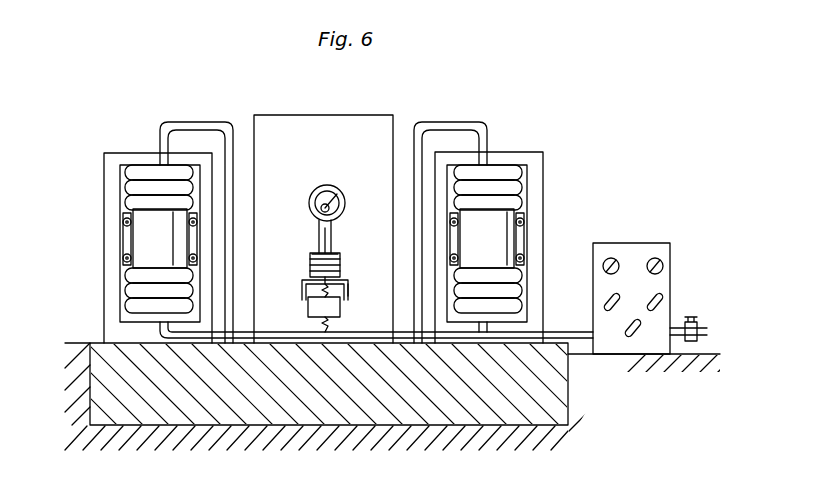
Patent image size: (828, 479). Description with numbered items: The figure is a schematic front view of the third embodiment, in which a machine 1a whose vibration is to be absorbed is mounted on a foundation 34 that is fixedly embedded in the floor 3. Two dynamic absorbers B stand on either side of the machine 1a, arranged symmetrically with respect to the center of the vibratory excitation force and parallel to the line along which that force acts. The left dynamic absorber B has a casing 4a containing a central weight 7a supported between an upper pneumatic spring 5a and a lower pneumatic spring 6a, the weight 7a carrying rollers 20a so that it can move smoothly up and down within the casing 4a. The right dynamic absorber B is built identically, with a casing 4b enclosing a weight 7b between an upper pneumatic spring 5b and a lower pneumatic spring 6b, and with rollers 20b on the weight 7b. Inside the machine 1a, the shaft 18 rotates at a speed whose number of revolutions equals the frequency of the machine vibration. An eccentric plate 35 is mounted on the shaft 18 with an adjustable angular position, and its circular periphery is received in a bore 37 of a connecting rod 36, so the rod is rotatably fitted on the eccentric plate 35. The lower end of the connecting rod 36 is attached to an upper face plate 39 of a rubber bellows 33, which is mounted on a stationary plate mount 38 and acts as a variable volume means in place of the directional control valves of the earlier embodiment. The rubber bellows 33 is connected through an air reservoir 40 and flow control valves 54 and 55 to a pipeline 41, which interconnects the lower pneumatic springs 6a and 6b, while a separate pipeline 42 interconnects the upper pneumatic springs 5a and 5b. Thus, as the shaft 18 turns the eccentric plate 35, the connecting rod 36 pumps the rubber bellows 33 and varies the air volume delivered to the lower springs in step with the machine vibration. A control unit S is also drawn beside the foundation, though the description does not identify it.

The machine 1a is at (331, 115).
The floor 3 is at (82, 362).
The casing 4a is at (104, 266).
The casing 4b is at (545, 262).
The upper pneumatic spring 5a is at (130, 186).
The upper pneumatic spring 5b is at (515, 186).
The lower pneumatic spring 6a is at (130, 294).
The lower pneumatic spring 6b is at (510, 289).
The weight 7a is at (133, 238).
The weight 7b is at (510, 238).
The shaft 18 is at (333, 194).
The rollers 20a is at (123, 216).
The rollers 20b is at (527, 216).
The rubber bellows 33 is at (310, 264).
The foundation 34 is at (477, 425).
The eccentric plate 35 is at (331, 207).
The connecting rod 36 is at (318, 235).
The bore 37 is at (316, 195).
The stationary plate mount 38 is at (348, 287).
The upper face plate 39 is at (338, 254).
The air reservoir 40 is at (340, 306).
The pipeline 41 is at (368, 345).
The pipeline 42 is at (203, 122).
The flow control valve 54 is at (307, 290).
The flow control valve 55 is at (320, 324).
The dynamic absorber B is at (130, 153).
The control box S is at (632, 243).